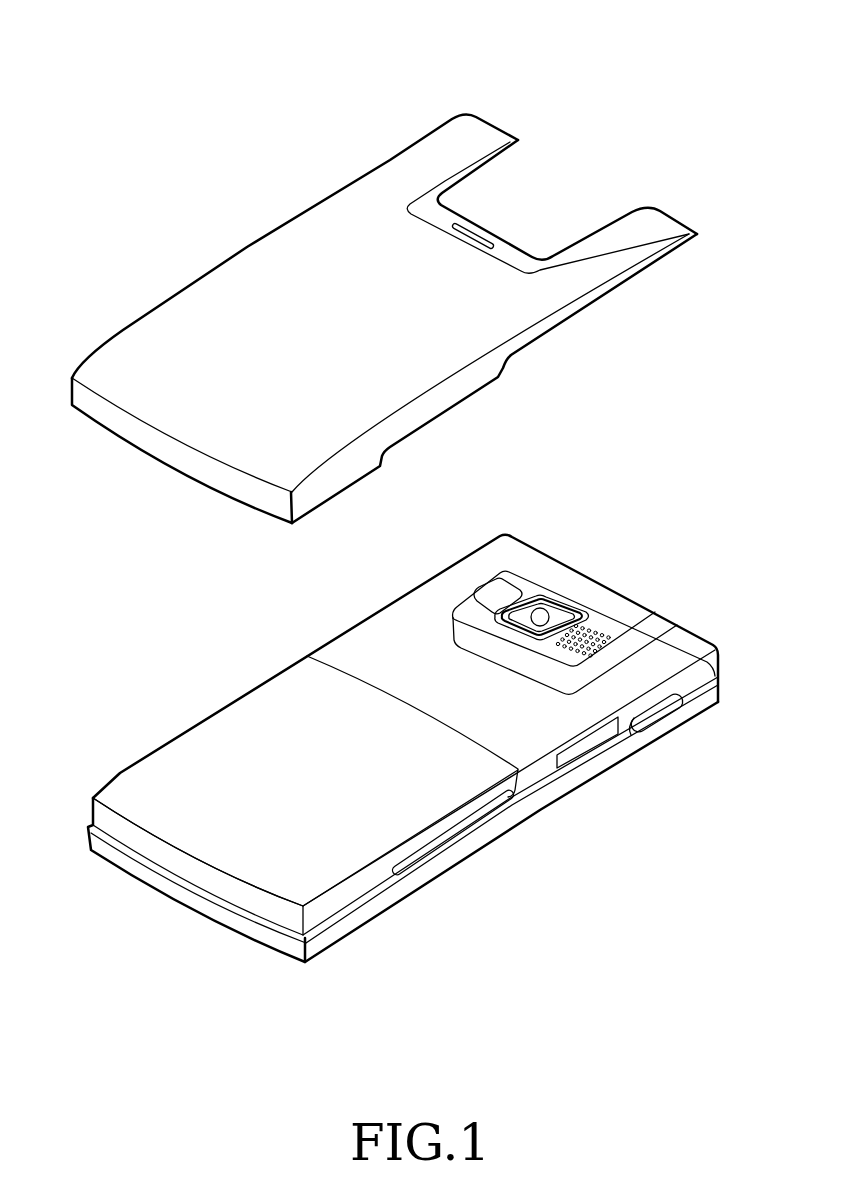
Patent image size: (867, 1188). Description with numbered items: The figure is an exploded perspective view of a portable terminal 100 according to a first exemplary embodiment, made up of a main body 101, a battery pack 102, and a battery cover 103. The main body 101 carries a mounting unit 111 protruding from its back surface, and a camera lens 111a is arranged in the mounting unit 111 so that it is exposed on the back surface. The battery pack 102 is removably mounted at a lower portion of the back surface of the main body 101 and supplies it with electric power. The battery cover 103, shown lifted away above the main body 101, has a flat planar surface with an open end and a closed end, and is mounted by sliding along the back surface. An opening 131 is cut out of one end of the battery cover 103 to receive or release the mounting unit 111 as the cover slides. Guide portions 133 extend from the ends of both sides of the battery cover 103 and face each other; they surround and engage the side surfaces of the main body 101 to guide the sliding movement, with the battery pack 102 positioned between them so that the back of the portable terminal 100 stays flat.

The portable terminal 100 is at (361, 44).
The main body 101 is at (533, 852).
The battery pack 102 is at (175, 763).
The battery cover 103 is at (275, 267).
The mounting unit 111 is at (558, 594).
The camera lens 111a is at (542, 615).
The opening 131 is at (533, 202).
The guide portions 133 is at (340, 483).